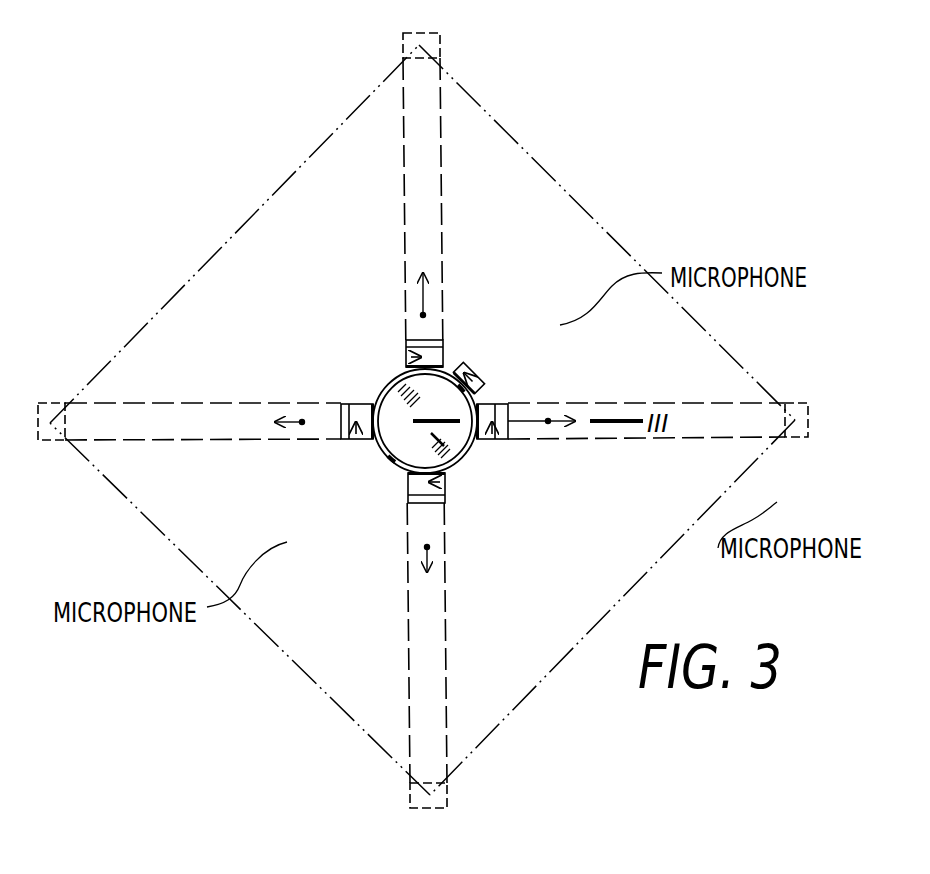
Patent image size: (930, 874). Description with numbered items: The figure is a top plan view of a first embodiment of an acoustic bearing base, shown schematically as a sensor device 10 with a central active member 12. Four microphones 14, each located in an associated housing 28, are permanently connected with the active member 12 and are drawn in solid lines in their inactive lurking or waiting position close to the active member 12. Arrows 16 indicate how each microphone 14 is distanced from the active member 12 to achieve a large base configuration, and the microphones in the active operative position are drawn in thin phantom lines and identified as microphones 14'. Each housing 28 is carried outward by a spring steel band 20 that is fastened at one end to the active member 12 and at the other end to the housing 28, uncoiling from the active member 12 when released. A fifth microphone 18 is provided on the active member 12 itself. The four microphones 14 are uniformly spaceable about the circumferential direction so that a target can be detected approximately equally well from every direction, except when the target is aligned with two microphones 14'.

The sensor device 10 is at (653, 212).
The active member 12 is at (418, 437).
The microphone 14 is at (425, 434).
The housing 28 is at (406, 355).
The microphone in active operative position 14' is at (434, 432).
The arrows 16 is at (423, 315).
The fifth microphone 18 is at (485, 375).
The spring steel band 20 is at (442, 220).